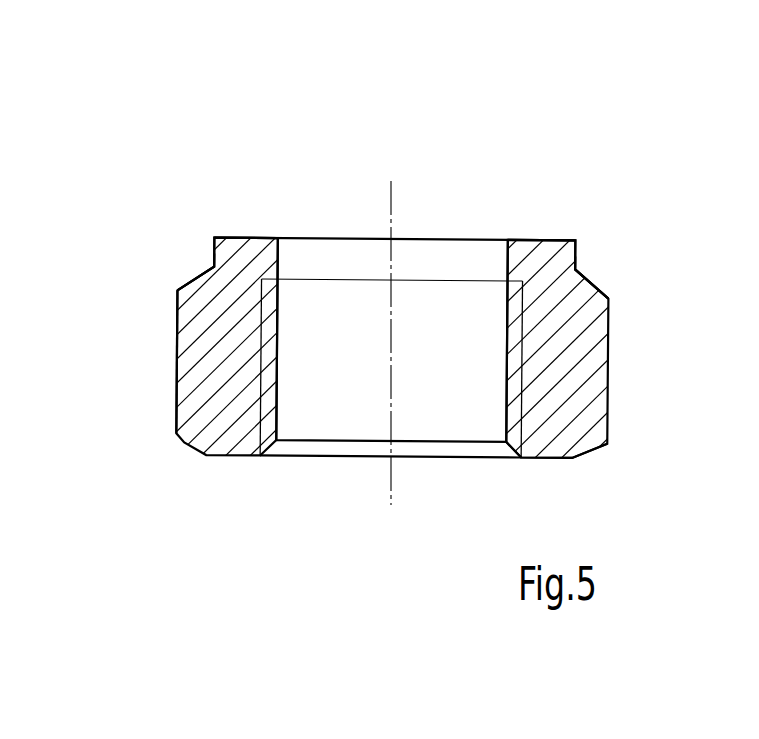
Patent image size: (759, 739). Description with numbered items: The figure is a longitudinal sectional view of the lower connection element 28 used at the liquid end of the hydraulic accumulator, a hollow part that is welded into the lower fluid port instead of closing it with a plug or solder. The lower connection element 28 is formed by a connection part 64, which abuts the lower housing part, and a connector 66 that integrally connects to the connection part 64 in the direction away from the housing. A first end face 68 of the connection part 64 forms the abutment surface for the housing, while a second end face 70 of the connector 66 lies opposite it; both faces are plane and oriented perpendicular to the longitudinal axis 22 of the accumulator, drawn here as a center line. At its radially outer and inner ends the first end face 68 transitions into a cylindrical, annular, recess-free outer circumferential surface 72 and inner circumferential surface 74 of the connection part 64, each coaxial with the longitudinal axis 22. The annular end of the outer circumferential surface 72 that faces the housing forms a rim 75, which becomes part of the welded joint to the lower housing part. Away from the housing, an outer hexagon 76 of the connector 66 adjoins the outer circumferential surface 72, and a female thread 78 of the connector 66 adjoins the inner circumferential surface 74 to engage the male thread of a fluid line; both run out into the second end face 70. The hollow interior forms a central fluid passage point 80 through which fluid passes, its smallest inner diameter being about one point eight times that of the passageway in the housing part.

The lower connection element 28 is at (545, 138).
The longitudinal axis 22 is at (392, 485).
The connection part 64 is at (238, 250).
The connector 66 is at (205, 393).
The first end face 68 is at (533, 238).
The second end face 70 is at (543, 458).
The outer circumferential surface 72 is at (213, 258).
The inner circumferential surface 74 is at (282, 258).
The rim 75 is at (575, 247).
The outer hexagon 76 is at (178, 347).
The female thread 78 is at (265, 395).
The fluid passage point 80 is at (445, 360).